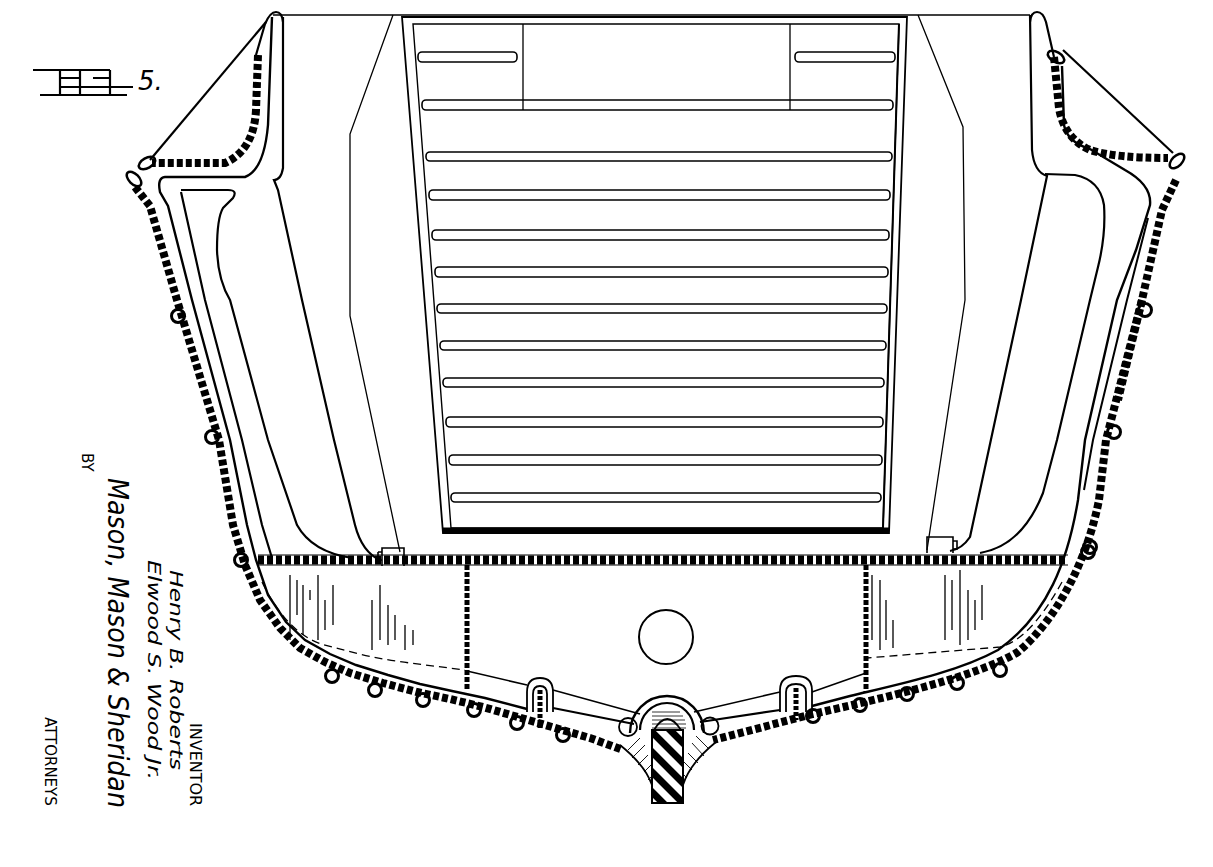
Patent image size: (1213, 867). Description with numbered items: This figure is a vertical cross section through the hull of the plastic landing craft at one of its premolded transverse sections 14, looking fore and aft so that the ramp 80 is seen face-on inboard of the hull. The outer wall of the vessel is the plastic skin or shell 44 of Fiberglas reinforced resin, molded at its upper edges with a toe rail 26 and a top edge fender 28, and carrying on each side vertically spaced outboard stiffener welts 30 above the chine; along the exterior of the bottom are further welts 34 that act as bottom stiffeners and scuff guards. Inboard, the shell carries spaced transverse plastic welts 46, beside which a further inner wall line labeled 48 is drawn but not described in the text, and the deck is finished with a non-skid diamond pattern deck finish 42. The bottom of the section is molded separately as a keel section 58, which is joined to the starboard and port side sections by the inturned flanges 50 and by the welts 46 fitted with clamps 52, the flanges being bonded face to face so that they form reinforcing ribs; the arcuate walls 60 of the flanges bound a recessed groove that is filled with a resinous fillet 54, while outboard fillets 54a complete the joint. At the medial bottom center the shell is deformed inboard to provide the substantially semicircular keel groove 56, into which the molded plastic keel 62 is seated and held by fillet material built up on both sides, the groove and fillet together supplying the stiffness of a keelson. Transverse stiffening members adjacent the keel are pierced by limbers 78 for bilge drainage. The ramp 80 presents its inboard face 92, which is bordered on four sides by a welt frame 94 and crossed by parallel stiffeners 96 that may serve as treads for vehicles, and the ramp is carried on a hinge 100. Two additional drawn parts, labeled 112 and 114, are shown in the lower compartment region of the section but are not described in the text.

The premolded transverse section 14 is at (1152, 249).
The toe rail 26 is at (146, 158).
The top edge fender 28 is at (128, 180).
The outboard stiffener welts 30 is at (172, 320).
The bottom welts 34 is at (452, 706).
The non-skid diamond pattern deck finish 42 is at (745, 566).
The plastic skin or shell 44 is at (1130, 366).
The transverse plastic welts 46 is at (232, 407).
The inner wall 48 is at (244, 343).
The flanges 50 is at (537, 680).
The clamps 52 is at (546, 692).
The fillet 54 is at (636, 766).
The outboard fillets 54a is at (540, 722).
The keel groove 56 is at (678, 714).
The keel section 58 is at (681, 706).
The arcuate flange wall 60 is at (667, 690).
The plastic keel 62 is at (690, 792).
The limbers 78 is at (624, 718).
The ramp 80 is at (952, 186).
The inboard face of the ramp 92 is at (890, 326).
The welt frame 94 is at (905, 285).
The parallel stiffeners 96 is at (752, 263).
The hinge 100 is at (395, 548).
The brace 112 is at (330, 566).
The partition 114 is at (469, 610).